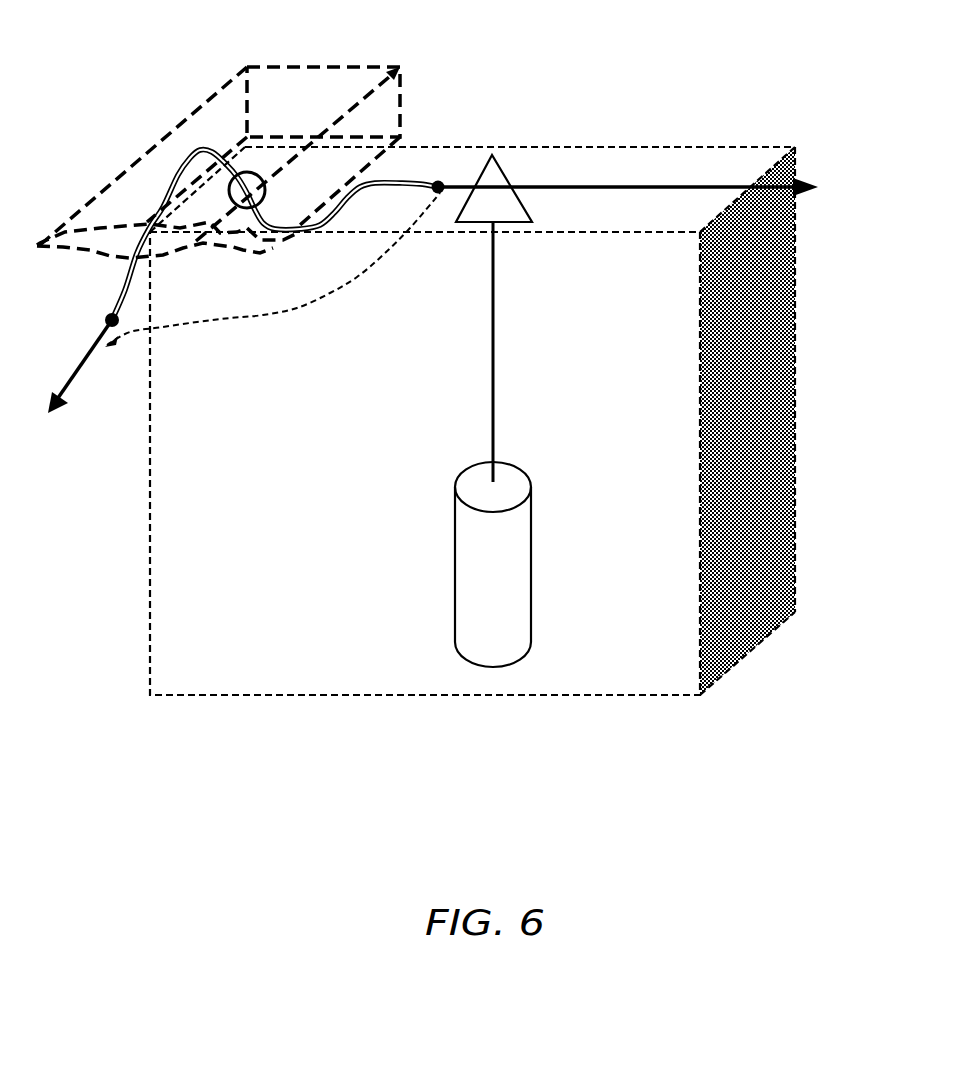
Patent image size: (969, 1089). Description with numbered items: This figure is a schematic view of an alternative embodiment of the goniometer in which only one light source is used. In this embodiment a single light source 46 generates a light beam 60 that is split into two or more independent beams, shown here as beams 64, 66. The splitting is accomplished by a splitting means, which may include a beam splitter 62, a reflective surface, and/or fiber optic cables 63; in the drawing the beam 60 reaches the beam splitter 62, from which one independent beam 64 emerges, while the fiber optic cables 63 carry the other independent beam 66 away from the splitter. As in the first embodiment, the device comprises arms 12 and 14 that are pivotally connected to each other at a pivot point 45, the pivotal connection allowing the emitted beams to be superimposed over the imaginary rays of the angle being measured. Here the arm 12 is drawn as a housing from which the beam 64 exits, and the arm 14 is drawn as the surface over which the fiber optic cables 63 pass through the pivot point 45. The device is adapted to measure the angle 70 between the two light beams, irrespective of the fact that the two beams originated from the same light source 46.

The arm 12 is at (758, 140).
The arm 14 is at (80, 248).
The pivot point 45 is at (255, 196).
The light source 46 is at (512, 545).
The light beam 60 is at (493, 307).
The beam splitter 62 is at (493, 167).
The fiber optic cables 63 is at (173, 177).
The independent beam 64 is at (587, 186).
The independent beam 66 is at (450, 204).
The angle 70 is at (388, 262).